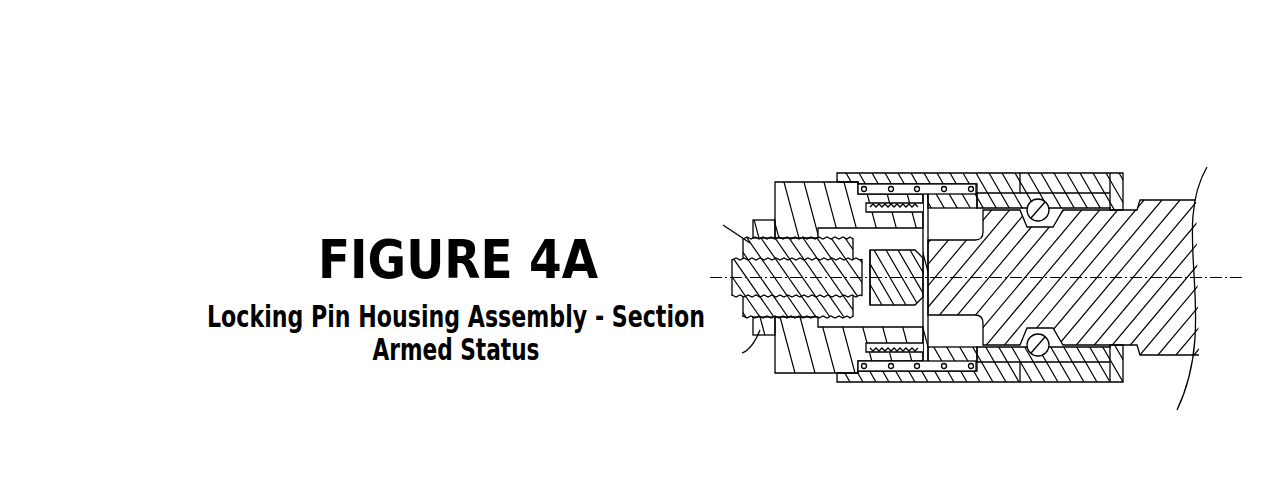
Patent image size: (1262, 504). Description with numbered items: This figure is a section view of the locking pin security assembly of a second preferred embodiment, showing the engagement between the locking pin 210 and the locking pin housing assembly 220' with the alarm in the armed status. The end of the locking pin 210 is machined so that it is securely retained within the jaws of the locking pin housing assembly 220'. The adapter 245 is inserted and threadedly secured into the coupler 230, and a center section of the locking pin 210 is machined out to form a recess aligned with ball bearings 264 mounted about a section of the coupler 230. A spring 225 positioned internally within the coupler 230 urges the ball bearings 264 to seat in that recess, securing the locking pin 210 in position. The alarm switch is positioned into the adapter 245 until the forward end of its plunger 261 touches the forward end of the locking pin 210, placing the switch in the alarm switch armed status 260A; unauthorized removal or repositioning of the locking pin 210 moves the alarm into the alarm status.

The locking pin housing assembly 220' is at (857, 221).
The alarm switch armed status 260A is at (883, 260).
The spring 225 is at (953, 200).
The coupler 230 is at (1082, 175).
The adapter 245 is at (815, 370).
The plunger 261 is at (907, 307).
The ball bearing 264 is at (1038, 357).
The locking pin 210 is at (1173, 320).